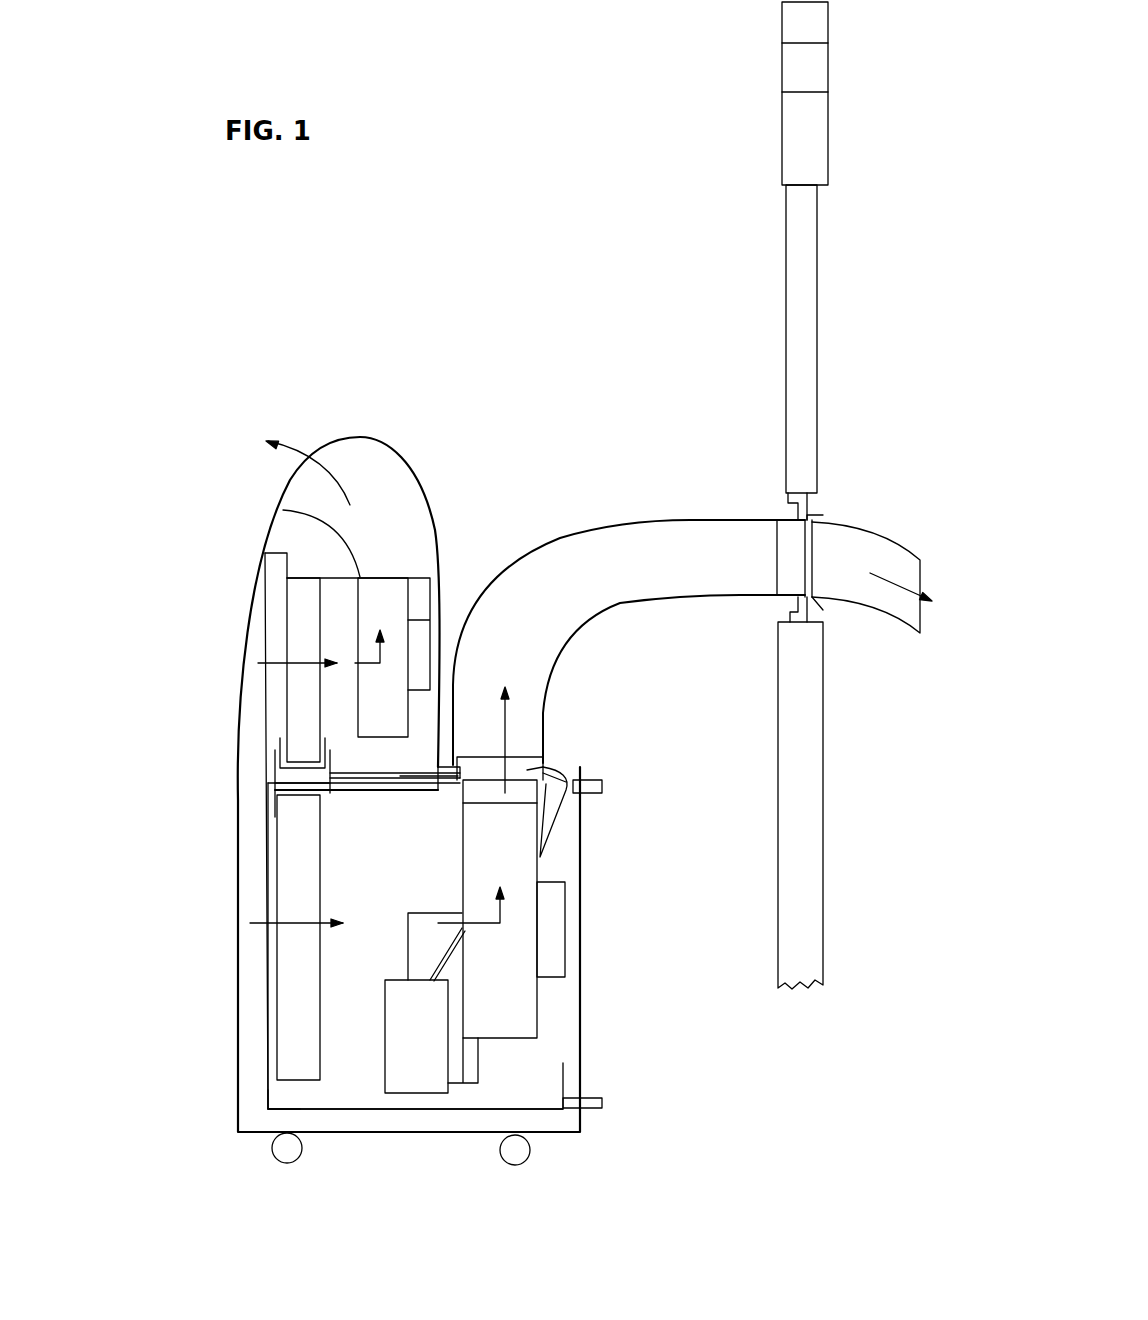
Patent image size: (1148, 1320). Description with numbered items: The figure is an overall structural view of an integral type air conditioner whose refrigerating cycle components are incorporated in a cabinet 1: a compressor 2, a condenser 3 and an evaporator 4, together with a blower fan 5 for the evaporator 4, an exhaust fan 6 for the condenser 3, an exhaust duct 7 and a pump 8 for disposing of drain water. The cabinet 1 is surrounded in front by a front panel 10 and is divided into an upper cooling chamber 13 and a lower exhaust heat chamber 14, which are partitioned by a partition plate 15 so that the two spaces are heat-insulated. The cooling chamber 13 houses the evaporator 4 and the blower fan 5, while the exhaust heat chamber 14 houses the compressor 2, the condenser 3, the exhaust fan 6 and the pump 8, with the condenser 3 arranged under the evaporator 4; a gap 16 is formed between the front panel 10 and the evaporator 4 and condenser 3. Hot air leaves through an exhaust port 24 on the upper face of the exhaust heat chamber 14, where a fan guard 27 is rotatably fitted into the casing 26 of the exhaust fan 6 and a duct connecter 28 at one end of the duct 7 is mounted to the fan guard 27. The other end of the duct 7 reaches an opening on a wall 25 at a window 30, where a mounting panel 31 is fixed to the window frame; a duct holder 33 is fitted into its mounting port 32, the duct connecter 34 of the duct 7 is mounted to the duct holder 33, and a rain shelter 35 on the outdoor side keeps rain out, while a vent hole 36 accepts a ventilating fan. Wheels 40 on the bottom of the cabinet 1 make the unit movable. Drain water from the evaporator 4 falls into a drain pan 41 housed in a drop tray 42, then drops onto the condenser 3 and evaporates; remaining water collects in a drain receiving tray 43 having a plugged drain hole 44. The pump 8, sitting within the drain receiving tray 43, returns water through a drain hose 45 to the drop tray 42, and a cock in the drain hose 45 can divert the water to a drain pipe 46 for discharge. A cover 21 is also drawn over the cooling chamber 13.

The cabinet 1 is at (410, 437).
The compressor 2 is at (462, 1075).
The condenser 3 is at (302, 1000).
The evaporator 4 is at (302, 597).
The blower fan 5 is at (387, 600).
The exhaust fan 6 is at (515, 1002).
The exhaust duct 7 is at (623, 557).
The pump 8 is at (412, 1083).
The front panel 10 is at (240, 778).
The cooling chamber 13 is at (335, 643).
The exhaust heat chamber 14 is at (343, 1095).
The partition plate 15 is at (355, 793).
The gap 16 is at (245, 947).
The dome cover 21 is at (338, 455).
The exhaust port 24 is at (493, 797).
The wall 25 is at (803, 830).
The casing 26 is at (535, 795).
The fan guard 27 is at (547, 773).
The duct connecter 28 is at (527, 770).
The window 30 is at (803, 260).
The mounting panel 31 is at (810, 485).
The mounting port 32 is at (805, 592).
The duct holder 33 is at (818, 600).
The duct connecter 34 is at (790, 542).
The rain shelter 35 is at (850, 537).
The vent hole 36 is at (798, 68).
The wheels 40 is at (513, 1150).
The drain pan 41 is at (275, 747).
The drop tray 42 is at (283, 783).
The drain receiving tray 43 is at (268, 1100).
The drain hole 44 is at (592, 1105).
The drain hose 45 is at (402, 777).
The drain pipe 46 is at (588, 785).